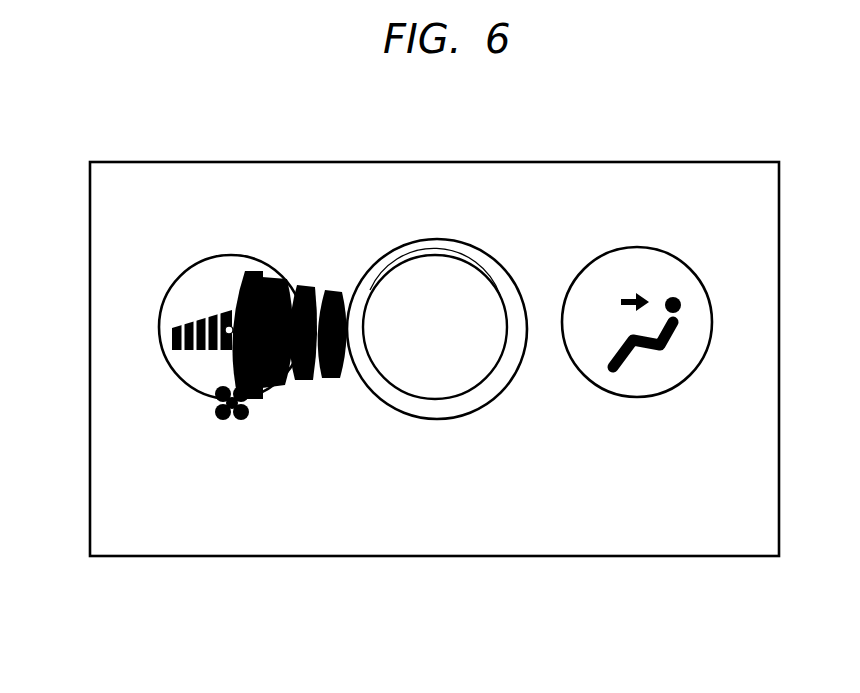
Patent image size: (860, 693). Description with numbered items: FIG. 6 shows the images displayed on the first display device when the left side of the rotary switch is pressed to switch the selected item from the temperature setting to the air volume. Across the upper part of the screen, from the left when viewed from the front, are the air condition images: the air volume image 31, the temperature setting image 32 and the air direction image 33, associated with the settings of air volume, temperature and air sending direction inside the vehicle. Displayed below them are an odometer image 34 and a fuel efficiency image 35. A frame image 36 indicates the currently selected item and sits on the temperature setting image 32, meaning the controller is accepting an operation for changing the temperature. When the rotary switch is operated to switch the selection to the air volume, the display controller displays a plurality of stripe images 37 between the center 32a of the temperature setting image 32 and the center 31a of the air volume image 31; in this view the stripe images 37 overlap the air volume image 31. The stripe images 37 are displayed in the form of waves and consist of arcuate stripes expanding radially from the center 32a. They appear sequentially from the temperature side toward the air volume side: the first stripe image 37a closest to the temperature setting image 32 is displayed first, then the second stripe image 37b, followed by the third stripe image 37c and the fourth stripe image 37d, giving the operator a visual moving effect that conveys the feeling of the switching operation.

The air volume image 31 is at (184, 247).
The center of the air volume image 31a is at (205, 318).
The temperature setting image 32 is at (484, 282).
The center of the temperature setting image 32a is at (437, 323).
The air direction image 33 is at (648, 228).
The odometer image 34 is at (203, 558).
The fuel efficiency image 35 is at (617, 558).
The frame image 36 is at (400, 258).
The stripe images 37 is at (204, 368).
The first stripe image 37a is at (327, 380).
The second stripe image 37b is at (290, 380).
The third stripe image 37c is at (262, 382).
The fourth stripe image 37d is at (240, 300).